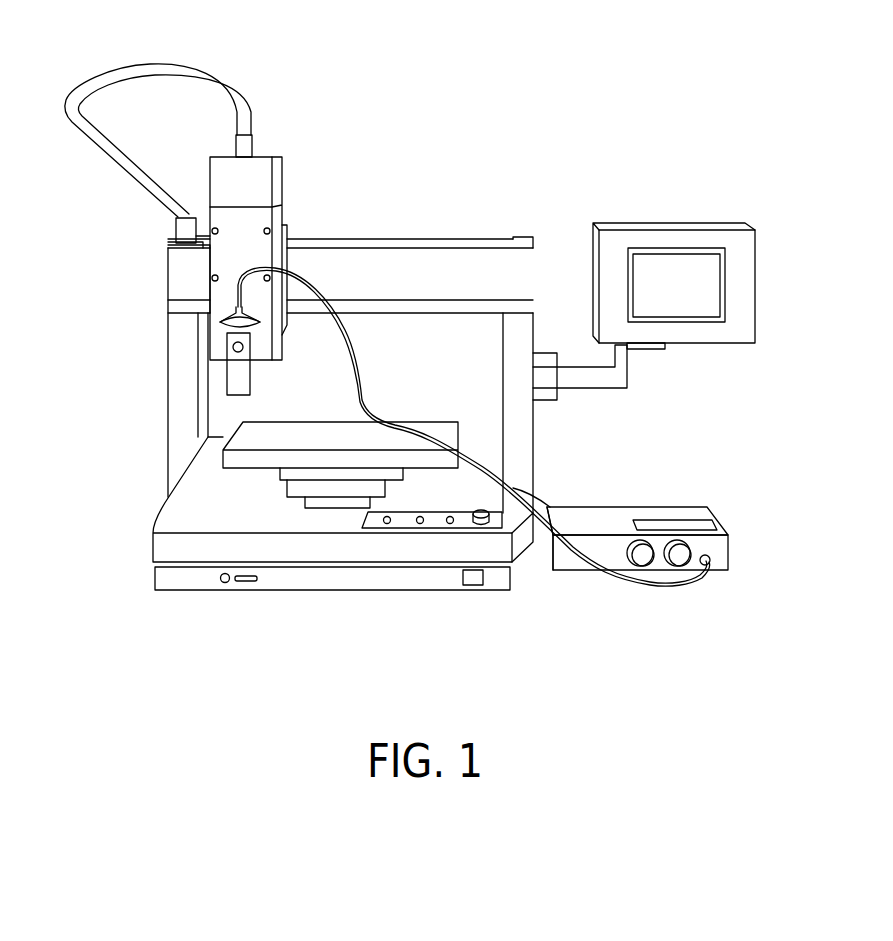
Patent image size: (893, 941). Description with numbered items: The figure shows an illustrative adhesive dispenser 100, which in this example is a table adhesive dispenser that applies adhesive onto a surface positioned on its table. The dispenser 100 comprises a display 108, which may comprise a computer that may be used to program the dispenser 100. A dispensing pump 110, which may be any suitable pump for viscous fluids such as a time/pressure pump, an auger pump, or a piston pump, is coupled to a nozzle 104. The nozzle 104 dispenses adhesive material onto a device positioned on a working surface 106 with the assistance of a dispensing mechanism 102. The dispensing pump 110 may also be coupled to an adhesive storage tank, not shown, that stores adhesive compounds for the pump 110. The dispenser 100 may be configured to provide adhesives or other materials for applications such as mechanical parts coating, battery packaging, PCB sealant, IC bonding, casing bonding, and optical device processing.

The adhesive dispenser 100 is at (425, 96).
The dispensing mechanism 102 is at (293, 161).
The nozzle 104 is at (236, 373).
The working surface 106 is at (365, 445).
The display 108 is at (687, 234).
The dispensing pump 110 is at (597, 567).